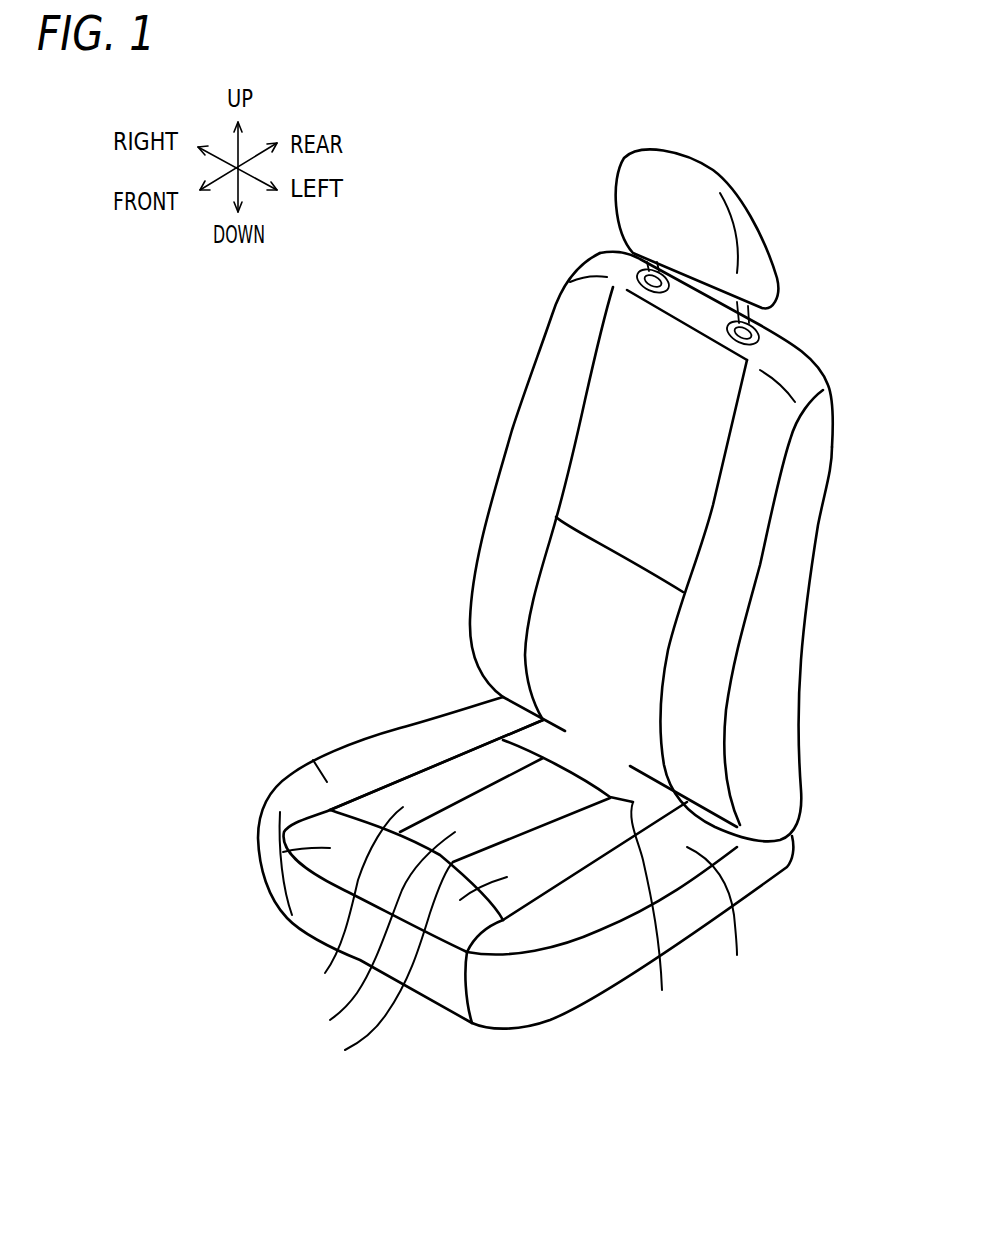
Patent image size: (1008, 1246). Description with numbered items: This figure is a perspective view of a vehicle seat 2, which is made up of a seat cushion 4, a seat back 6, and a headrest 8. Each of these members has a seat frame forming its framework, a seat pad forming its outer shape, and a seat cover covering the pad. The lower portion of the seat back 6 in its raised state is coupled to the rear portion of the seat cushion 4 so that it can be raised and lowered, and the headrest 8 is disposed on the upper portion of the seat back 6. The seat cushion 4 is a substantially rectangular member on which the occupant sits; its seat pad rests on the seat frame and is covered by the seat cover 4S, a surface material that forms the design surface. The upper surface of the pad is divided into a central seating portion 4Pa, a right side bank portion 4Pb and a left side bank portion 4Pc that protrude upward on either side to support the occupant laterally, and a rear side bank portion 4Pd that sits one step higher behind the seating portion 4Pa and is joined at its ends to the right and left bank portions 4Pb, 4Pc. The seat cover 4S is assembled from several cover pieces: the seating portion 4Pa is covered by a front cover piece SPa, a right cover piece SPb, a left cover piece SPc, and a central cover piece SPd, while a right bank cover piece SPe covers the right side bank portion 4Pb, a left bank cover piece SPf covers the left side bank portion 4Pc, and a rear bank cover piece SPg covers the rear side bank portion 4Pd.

The vehicle seat 2 is at (803, 193).
The seat cushion 4 is at (437, 707).
The seat back 6 is at (541, 361).
The headrest 8 is at (618, 208).
The seat cover 4S is at (245, 984).
The seating portion 4Pa is at (505, 810).
The right side bank portion 4Pb is at (436, 765).
The left side bank portion 4Pc is at (602, 878).
The rear side bank portion 4Pd is at (620, 762).
The front cover piece SPa is at (283, 852).
The right cover piece SPb is at (325, 973).
The left cover piece SPc is at (345, 1050).
The central cover piece SPd is at (330, 1020).
The right bank cover piece SPe is at (313, 760).
The left bank cover piece SPf is at (752, 915).
The rear bank cover piece SPg is at (684, 912).